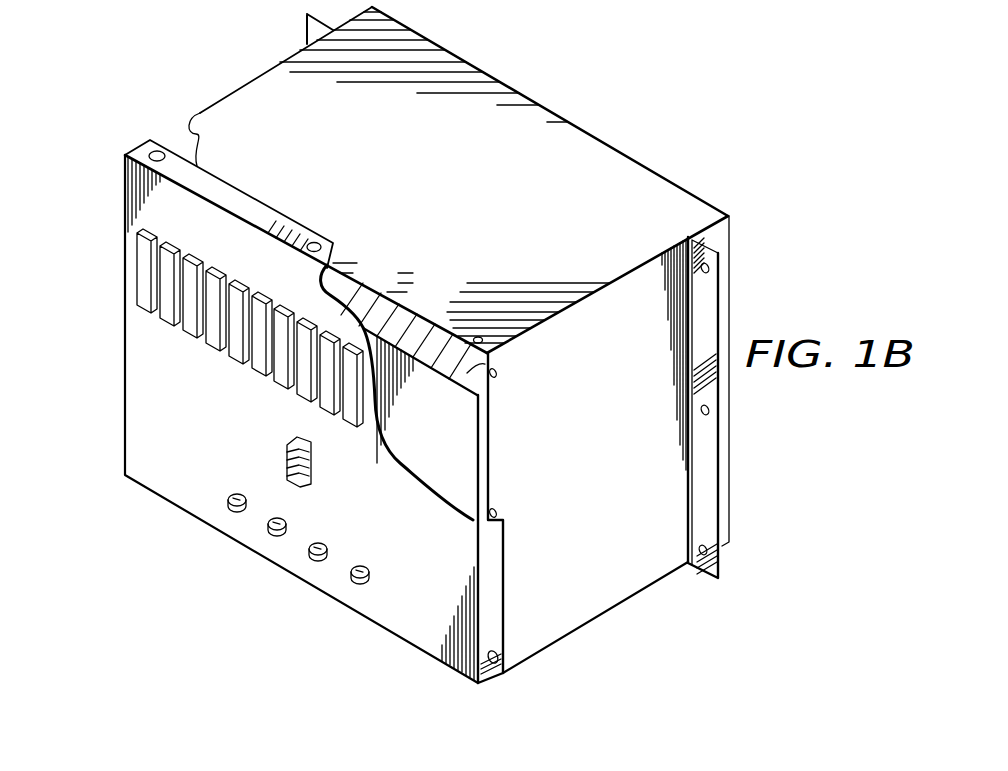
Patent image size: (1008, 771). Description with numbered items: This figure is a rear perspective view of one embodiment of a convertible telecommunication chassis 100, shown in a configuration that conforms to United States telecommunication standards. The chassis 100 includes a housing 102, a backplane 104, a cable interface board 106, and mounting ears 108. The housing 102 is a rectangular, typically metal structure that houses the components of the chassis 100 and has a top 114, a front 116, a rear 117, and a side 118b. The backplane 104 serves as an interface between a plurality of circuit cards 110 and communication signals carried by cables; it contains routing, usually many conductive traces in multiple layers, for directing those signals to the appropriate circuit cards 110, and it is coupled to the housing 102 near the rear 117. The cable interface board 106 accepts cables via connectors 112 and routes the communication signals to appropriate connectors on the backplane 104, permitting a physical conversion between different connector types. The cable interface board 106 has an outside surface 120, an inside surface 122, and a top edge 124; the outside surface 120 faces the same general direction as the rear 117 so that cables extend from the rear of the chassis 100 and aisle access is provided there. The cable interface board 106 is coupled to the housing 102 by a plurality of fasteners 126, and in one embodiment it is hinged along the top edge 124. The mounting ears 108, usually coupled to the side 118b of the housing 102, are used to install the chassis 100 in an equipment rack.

The chassis 100 is at (586, 111).
The housing 102 is at (731, 214).
The backplane 104 is at (477, 467).
The cable interface board 106 is at (127, 402).
The mounting ears 108 is at (314, 31).
The circuit cards 110 is at (380, 310).
The connectors 112 is at (216, 350).
The top 114 is at (453, 196).
The front 116 is at (668, 181).
The rear 117 is at (462, 396).
The side 118b is at (612, 564).
The outside surface 120 is at (198, 460).
The inside surface 122 is at (167, 148).
The top edge 124 is at (255, 217).
The fasteners 126 is at (147, 148).